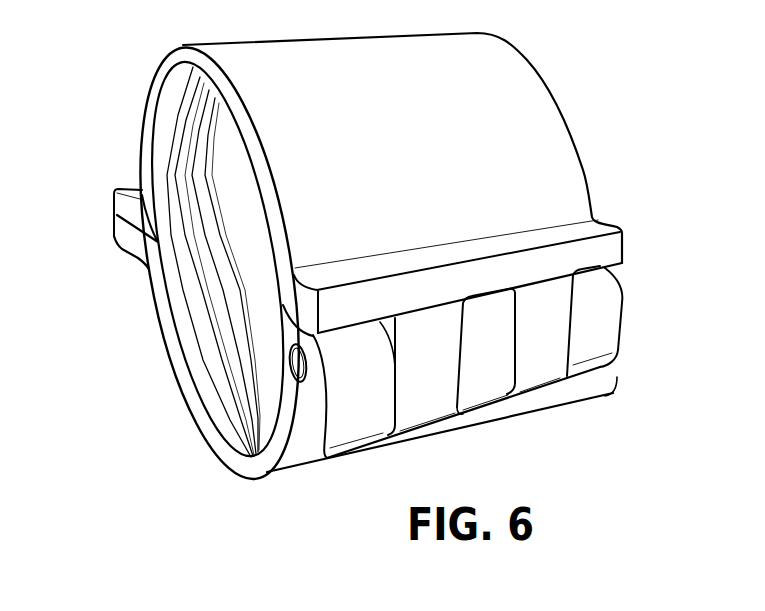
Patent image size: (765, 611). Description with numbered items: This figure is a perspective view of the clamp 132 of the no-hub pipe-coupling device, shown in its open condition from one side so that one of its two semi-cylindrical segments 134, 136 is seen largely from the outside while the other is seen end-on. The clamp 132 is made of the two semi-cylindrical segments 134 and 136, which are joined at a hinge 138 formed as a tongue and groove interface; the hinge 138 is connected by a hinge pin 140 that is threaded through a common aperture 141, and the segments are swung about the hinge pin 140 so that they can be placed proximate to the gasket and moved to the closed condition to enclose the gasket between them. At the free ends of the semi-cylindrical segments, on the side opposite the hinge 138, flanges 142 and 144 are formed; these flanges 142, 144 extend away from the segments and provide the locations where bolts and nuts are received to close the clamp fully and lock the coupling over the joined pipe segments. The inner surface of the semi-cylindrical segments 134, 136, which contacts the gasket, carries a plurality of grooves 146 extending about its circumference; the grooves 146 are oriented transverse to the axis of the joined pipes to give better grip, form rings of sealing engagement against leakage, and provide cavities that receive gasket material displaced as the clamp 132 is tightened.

The clamp 132 is at (376, 282).
The semi-cylindrical segment 134 is at (567, 115).
The semi-cylindrical segment 136 is at (267, 481).
The hinge 138 is at (613, 379).
The hinge pin 140 is at (296, 364).
The common aperture 141 is at (287, 382).
The flange 142 is at (115, 198).
The flange 144 is at (115, 233).
The grooves 146 is at (212, 352).